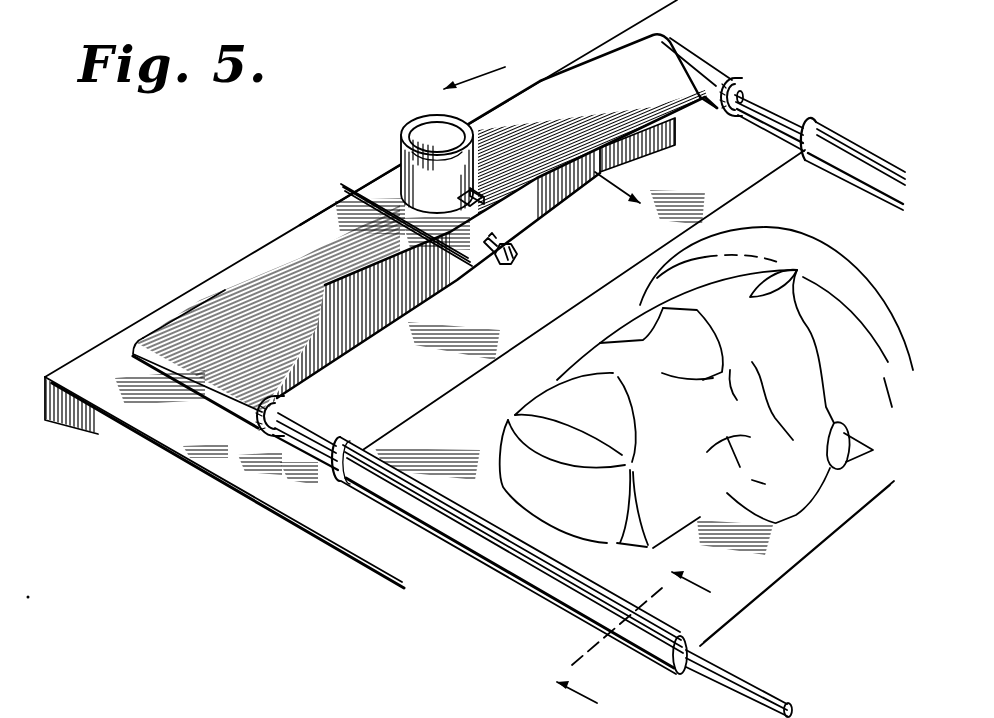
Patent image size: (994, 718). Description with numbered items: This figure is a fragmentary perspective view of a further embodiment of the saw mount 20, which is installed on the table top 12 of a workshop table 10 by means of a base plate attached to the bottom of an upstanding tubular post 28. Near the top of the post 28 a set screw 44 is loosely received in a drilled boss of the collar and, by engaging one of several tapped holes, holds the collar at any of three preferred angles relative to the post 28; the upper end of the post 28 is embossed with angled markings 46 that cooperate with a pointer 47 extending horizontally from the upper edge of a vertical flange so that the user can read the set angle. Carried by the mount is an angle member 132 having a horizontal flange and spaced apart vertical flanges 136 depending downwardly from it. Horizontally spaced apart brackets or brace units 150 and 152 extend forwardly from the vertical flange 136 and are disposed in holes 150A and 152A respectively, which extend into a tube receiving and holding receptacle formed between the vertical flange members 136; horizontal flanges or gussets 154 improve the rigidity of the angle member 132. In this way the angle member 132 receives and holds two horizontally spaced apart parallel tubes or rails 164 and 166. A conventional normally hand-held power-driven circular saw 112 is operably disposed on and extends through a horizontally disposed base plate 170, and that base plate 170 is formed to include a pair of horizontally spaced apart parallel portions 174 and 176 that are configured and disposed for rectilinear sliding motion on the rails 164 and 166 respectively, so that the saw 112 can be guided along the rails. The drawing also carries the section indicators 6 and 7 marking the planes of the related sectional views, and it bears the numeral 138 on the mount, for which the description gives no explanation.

The workshop table 10 is at (280, 545).
The table top 12 is at (107, 428).
The saw mount 20 is at (770, 36).
The tubular post 28 is at (412, 134).
The set screw 44 is at (507, 256).
The angled markings 46 is at (403, 190).
The pointer 47 is at (476, 197).
The power-driven circular saw 112 is at (823, 276).
The angle member 132 is at (203, 286).
The vertical flange 136 is at (412, 290).
The mounting bracket 138 is at (478, 199).
The bracket or brace unit 150 is at (290, 408).
The hole 150A is at (272, 436).
The bracket or brace unit 152 is at (745, 95).
The hole 152A is at (757, 122).
The horizontal flange or gusset 154 is at (655, 138).
The tube or rail 164 is at (300, 452).
The tube or rail 166 is at (785, 124).
The base plate 170 is at (756, 612).
The parallely oriented portion 174 is at (437, 520).
The parallely oriented portion 176 is at (827, 157).
The section line 6- 6 is at (621, 623).
The section line 7- 7 is at (530, 146).